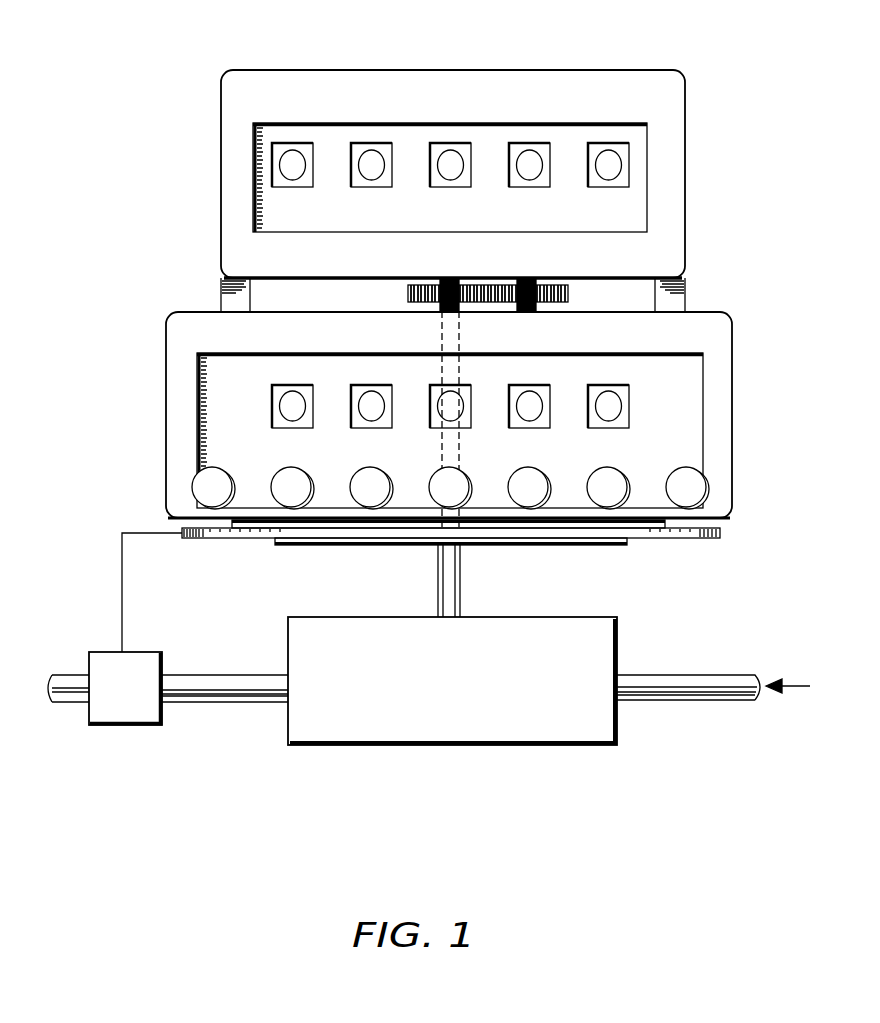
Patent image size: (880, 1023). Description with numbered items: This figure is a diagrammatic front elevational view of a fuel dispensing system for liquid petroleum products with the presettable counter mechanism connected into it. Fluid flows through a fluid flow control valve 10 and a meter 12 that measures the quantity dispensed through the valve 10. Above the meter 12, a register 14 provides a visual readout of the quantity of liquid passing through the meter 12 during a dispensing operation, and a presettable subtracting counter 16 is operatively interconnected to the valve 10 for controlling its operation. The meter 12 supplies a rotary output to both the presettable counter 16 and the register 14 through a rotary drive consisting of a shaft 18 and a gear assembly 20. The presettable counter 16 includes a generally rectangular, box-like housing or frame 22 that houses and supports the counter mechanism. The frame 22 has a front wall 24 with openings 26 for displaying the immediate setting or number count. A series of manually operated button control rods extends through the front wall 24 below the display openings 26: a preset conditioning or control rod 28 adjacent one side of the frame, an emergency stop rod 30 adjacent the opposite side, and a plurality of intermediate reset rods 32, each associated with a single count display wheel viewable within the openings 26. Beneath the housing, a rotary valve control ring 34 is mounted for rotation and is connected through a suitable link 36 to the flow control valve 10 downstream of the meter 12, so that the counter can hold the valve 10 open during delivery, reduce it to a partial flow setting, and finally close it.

The fluid flow control valve 10 is at (123, 715).
The meter 12 is at (458, 732).
The register 14 is at (605, 70).
The presettable subtracting counter 16 is at (180, 308).
The shaft 18 is at (445, 577).
The gear assembly 20 is at (493, 278).
The housing or frame 22 is at (737, 462).
The front wall 24 is at (681, 413).
The openings 26 is at (377, 418).
The preset conditioning or control rod 28 is at (213, 472).
The emergency stop rod 30 is at (682, 478).
The intermediate reset rods 32 is at (285, 478).
The rotary valve control ring 34 is at (210, 538).
The link 36 is at (122, 580).